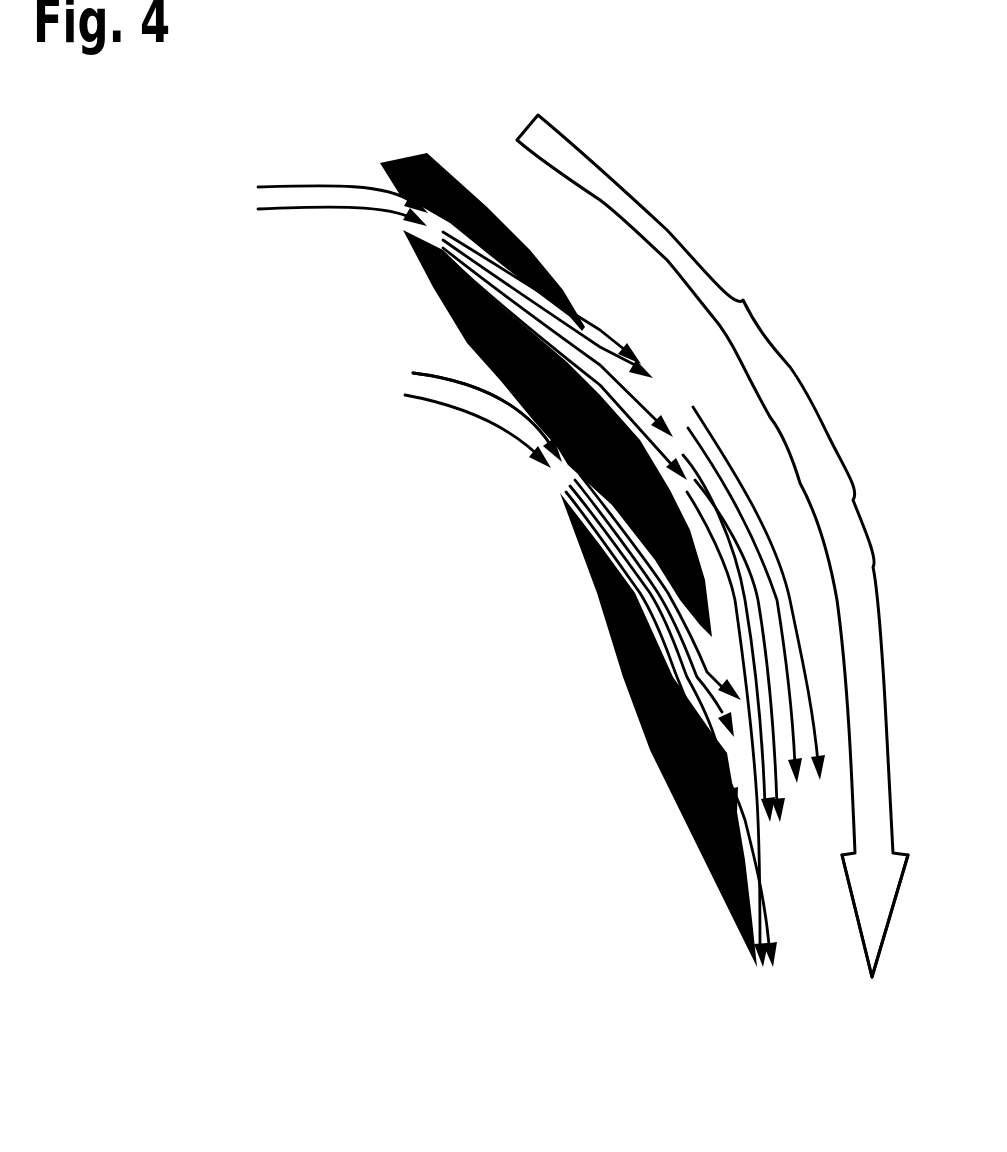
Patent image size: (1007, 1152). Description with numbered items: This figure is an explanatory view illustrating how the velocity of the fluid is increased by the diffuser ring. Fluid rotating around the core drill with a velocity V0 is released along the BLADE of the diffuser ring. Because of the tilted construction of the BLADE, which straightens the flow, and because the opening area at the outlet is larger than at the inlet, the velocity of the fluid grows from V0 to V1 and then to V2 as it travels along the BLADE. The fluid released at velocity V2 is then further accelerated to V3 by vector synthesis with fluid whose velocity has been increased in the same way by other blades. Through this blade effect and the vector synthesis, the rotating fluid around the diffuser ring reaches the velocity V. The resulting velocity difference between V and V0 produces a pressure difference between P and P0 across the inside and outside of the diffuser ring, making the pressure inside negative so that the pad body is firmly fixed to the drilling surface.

The velocity of rotating fluid around the core drill V0 is at (392, 327).
The first increased fluid velocity V1 is at (571, 356).
The fluid release velocity V2 is at (756, 614).
The vector-synthesized fluid velocity V3 is at (680, 741).
The pressure outside the diffuser ring P0 is at (484, 460).
The pressure inside the diffuser ring P is at (712, 546).
The velocity of rotating fluid around the diffuser ring V is at (885, 922).
The blade of diffuser ring BLADE is at (654, 749).